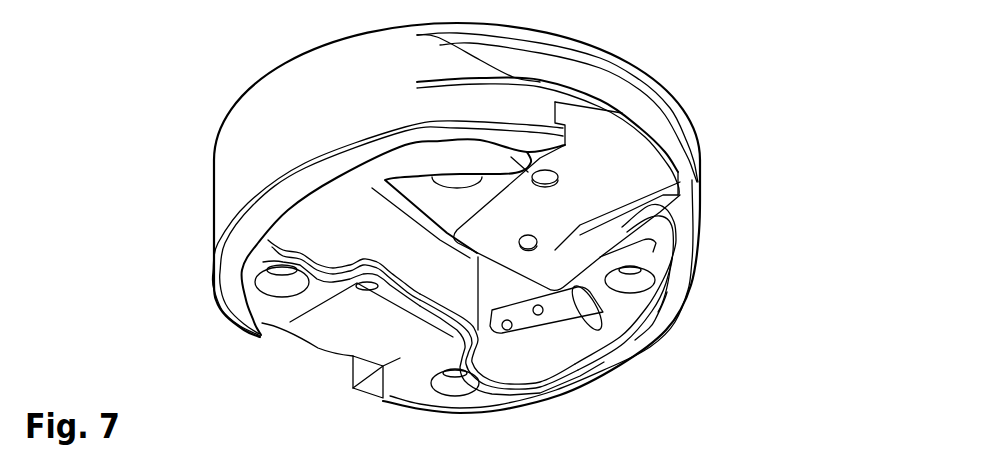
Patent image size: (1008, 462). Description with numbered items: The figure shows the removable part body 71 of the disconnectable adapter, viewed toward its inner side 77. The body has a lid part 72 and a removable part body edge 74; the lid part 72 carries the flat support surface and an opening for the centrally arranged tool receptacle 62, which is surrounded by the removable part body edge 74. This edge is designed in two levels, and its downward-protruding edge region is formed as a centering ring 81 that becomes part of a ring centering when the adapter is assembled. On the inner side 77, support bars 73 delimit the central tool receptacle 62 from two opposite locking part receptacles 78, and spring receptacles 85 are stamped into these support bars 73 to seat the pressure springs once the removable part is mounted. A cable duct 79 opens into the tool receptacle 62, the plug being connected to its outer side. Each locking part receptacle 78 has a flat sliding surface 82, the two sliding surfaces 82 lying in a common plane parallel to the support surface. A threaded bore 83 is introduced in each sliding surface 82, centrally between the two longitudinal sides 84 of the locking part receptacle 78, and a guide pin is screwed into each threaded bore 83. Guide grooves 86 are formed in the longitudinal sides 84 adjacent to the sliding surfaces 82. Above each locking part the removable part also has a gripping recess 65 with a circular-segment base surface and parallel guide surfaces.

The tool receptacle 62 is at (506, 302).
The gripping recess 65 is at (612, 90).
The removable part body 71 is at (197, 133).
The lid part 72 is at (675, 108).
The support bars 73 is at (412, 253).
The removable part body edge 74 is at (323, 88).
The inner side 77 is at (575, 327).
The locking part receptacles 78 is at (333, 315).
The cable duct 79 is at (602, 298).
The centering ring 81 is at (247, 272).
The sliding surface 82 is at (650, 170).
The threaded bore 83 is at (560, 176).
The longitudinal sides 84 is at (637, 212).
The spring receptacles 85 is at (670, 247).
The guide grooves 86 is at (670, 183).